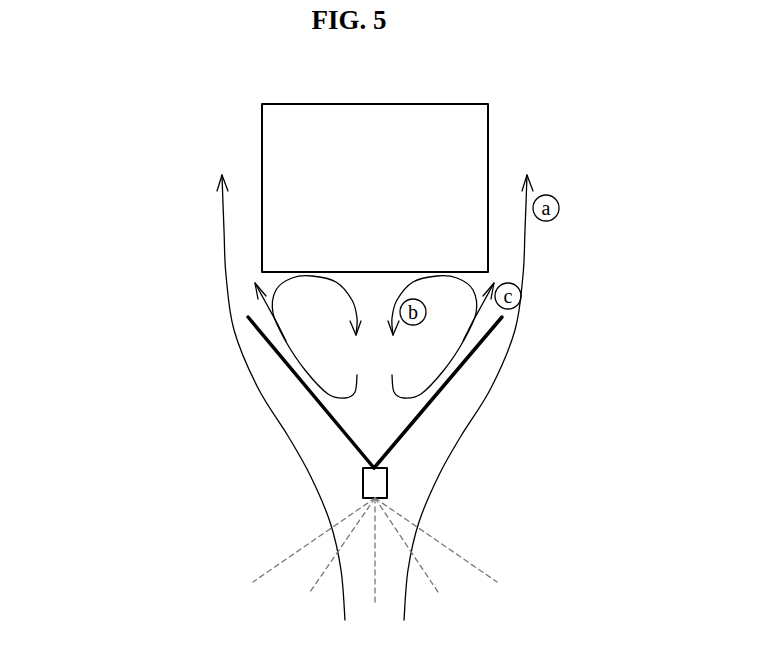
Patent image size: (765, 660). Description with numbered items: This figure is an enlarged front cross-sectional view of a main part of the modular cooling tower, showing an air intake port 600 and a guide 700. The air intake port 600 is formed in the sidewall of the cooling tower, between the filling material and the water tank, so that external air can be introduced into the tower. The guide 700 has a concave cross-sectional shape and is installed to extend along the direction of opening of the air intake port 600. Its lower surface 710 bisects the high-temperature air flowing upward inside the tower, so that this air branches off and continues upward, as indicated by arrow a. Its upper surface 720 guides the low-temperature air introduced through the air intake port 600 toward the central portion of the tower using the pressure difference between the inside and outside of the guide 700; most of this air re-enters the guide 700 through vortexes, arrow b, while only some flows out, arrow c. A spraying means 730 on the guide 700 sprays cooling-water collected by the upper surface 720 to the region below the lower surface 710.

The air intake port 600 is at (262, 133).
The guide 700 is at (256, 442).
The lower surface 710 is at (415, 432).
The upper surface 720 is at (358, 422).
The spraying means 730 is at (387, 488).